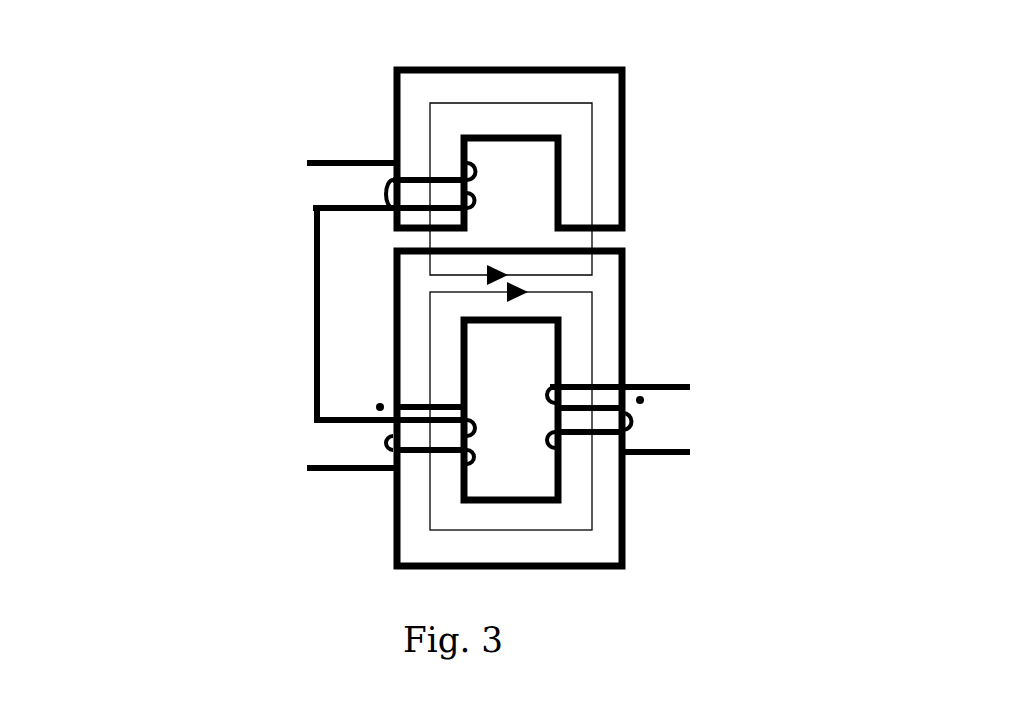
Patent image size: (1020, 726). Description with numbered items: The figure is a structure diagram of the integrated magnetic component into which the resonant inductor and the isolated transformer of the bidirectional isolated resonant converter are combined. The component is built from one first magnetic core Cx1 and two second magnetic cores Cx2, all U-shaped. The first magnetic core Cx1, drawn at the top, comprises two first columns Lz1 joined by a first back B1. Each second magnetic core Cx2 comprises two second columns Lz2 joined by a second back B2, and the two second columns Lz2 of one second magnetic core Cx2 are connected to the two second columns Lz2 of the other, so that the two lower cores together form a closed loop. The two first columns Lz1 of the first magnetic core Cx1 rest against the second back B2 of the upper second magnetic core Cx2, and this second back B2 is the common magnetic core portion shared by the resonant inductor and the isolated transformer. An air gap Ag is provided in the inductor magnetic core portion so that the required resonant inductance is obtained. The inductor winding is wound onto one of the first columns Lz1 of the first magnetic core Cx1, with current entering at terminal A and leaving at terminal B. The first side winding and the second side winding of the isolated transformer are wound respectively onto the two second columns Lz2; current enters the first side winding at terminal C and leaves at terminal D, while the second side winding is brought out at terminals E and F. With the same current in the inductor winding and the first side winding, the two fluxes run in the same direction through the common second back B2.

The first back B1 is at (488, 68).
The first magnetic core Cx1 is at (657, 110).
The first columns Lz1 is at (625, 170).
The terminal A is at (353, 148).
The terminal B is at (392, 312).
The air gap Ag is at (608, 240).
The second magnetic core Cx2 is at (651, 315).
The terminal E is at (620, 378).
The terminal F is at (656, 469).
The terminal C is at (397, 401).
The terminal D is at (352, 486).
The second columns Lz2 is at (393, 457).
The second back B2 is at (490, 562).